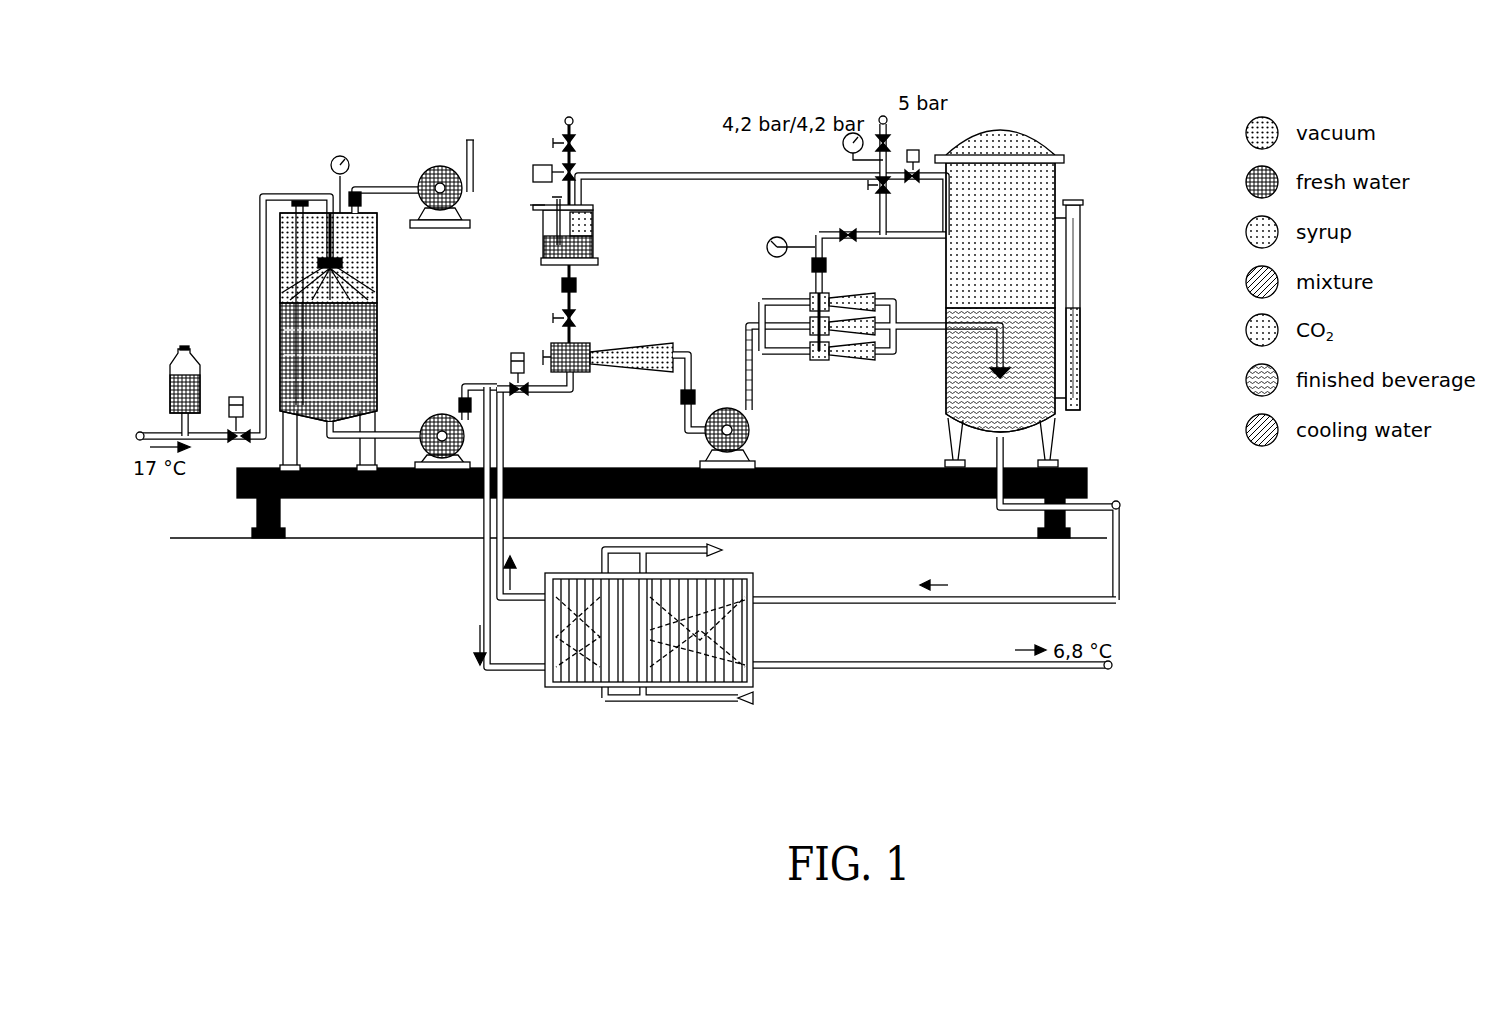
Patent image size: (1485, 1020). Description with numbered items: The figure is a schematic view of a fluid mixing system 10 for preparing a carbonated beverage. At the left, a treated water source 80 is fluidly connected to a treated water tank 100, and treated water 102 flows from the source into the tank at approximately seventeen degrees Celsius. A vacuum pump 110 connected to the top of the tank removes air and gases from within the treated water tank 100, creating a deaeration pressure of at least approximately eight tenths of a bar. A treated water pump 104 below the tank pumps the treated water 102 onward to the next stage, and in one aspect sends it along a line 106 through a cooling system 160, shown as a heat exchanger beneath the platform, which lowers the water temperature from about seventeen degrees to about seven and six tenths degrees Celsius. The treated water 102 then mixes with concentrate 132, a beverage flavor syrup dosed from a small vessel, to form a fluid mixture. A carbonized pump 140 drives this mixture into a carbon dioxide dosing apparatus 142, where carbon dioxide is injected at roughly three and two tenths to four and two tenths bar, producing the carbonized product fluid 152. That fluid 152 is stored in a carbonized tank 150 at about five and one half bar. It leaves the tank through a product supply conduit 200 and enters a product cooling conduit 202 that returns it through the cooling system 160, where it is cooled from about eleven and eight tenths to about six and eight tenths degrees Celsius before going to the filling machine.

The fluid mixing system 10 is at (537, 58).
The treated water source 80 is at (170, 388).
The treated water tank 100 is at (299, 302).
The treated water 102 is at (300, 357).
The treated water pump 104 is at (413, 443).
The line to heat exchanger 106 is at (487, 567).
The vacuum pump 110 is at (440, 166).
The concentrate 132 is at (595, 215).
The carbonized pump 140 is at (720, 410).
The carbon dioxide dosing apparatus 142 is at (860, 372).
The carbonized tank 150 is at (1046, 280).
The product fluid 152 is at (1035, 415).
The cooling system 160 is at (620, 712).
The product supply conduit 200 is at (1008, 465).
The product cooling conduit 202 is at (1119, 551).